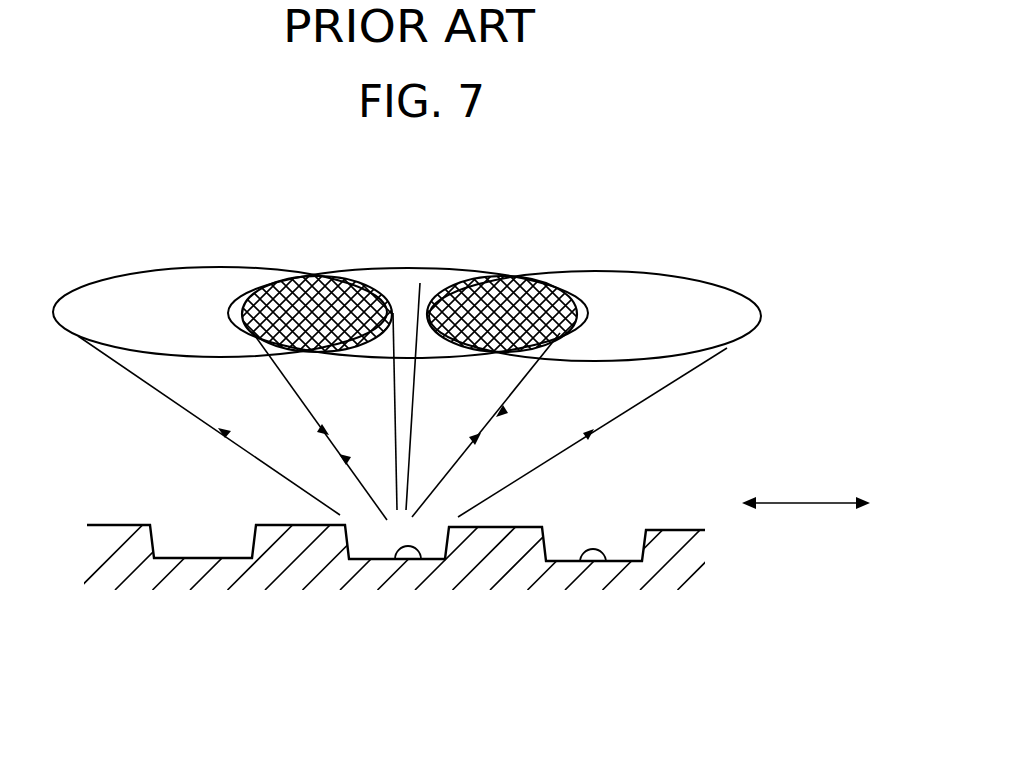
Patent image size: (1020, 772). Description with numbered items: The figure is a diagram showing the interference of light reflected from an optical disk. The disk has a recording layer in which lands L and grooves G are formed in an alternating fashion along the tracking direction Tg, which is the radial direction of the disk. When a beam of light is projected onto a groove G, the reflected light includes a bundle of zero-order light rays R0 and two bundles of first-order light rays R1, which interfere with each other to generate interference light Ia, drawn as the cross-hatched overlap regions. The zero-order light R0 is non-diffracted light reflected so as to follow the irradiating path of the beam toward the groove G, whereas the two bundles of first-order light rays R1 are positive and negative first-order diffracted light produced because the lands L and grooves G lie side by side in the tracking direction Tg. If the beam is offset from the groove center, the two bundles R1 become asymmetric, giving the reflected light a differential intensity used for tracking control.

The first-order light rays R1 is at (186, 290).
The zero-order light rays R0 is at (435, 280).
The interference light Ia is at (297, 293).
The land L is at (508, 527).
The groove G is at (421, 560).
The tracking direction Tg is at (806, 485).